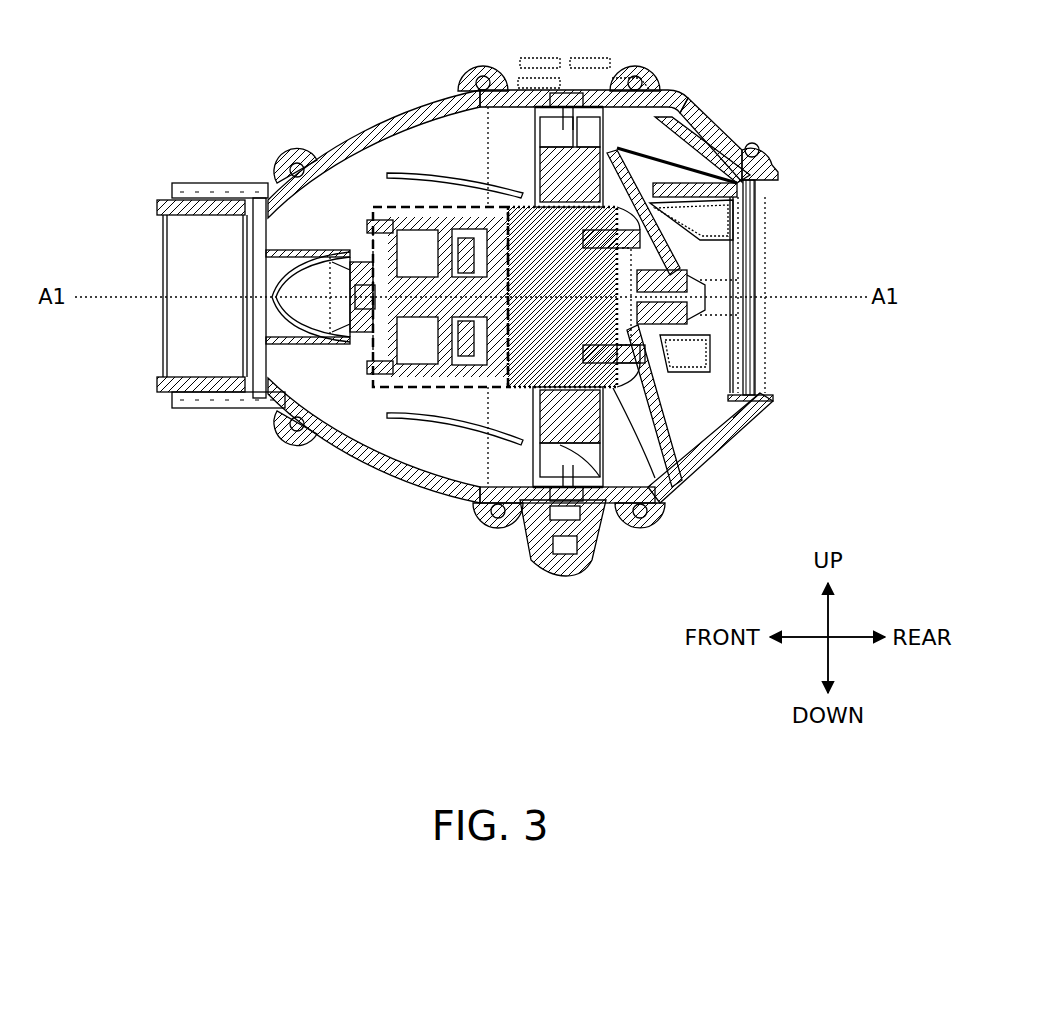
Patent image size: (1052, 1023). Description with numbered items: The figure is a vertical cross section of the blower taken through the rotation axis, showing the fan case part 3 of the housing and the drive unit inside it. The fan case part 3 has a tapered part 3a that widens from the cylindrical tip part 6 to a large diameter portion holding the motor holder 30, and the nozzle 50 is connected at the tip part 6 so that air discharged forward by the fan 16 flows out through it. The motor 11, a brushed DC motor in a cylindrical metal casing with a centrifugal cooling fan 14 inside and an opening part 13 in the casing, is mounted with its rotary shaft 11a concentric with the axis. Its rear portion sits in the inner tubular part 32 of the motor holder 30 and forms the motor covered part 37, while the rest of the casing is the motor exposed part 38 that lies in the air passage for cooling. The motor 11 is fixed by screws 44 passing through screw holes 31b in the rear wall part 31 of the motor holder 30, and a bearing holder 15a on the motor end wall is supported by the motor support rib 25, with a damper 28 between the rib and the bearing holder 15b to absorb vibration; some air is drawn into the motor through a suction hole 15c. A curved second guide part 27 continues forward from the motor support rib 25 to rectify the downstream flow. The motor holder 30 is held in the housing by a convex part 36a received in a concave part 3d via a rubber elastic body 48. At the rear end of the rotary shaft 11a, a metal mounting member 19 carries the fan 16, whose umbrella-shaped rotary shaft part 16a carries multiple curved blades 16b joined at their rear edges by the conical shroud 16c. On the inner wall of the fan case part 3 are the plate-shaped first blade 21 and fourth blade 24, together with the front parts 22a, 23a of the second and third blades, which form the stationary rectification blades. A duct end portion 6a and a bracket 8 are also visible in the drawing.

The fan case part 3 is at (694, 92).
The tapered part 3a is at (400, 132).
The concave part 3d is at (563, 96).
The tip part 6 is at (218, 185).
The duct end portion 6a is at (171, 188).
The bracket 8 is at (572, 572).
The motor 11 is at (533, 344).
The rotary shaft 11a is at (678, 280).
The opening part 13 is at (457, 366).
The cooling fan 14 is at (461, 240).
The bearing holder 15a is at (709, 316).
The bearing holder 15b is at (355, 326).
The suction hole 15c is at (378, 353).
The fan 16 is at (735, 419).
The rotary shaft part 16a is at (729, 321).
The blades 16b is at (661, 163).
The shroud 16c is at (728, 150).
The mounting member 19 is at (722, 297).
The first blade 21 is at (431, 190).
The front side part of second blade 22a is at (287, 215).
The front side part of third blade 23a is at (338, 334).
The fourth blade 24 is at (413, 418).
The motor support rib 25 is at (350, 254).
The second guide part 27 is at (280, 277).
The damper 28 is at (376, 244).
The motor holder 30 is at (641, 506).
The rear wall part 31 is at (661, 378).
The screw holes 31b is at (754, 200).
The inner tubular part 32 is at (484, 88).
The convex part 36a is at (576, 108).
The motor covered part 37 is at (624, 392).
The motor exposed part 38 is at (395, 346).
The screws 44 is at (634, 332).
The elastic body 48 is at (568, 95).
The nozzle 50 is at (166, 388).